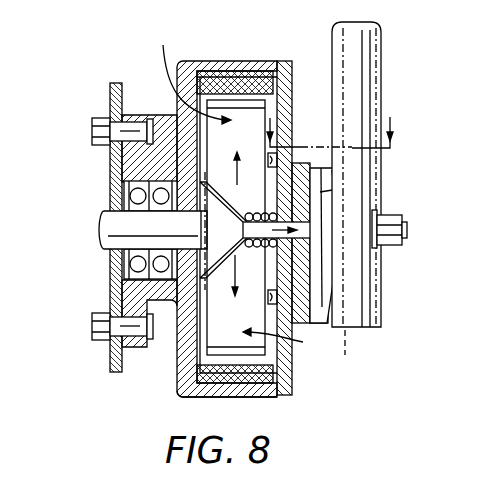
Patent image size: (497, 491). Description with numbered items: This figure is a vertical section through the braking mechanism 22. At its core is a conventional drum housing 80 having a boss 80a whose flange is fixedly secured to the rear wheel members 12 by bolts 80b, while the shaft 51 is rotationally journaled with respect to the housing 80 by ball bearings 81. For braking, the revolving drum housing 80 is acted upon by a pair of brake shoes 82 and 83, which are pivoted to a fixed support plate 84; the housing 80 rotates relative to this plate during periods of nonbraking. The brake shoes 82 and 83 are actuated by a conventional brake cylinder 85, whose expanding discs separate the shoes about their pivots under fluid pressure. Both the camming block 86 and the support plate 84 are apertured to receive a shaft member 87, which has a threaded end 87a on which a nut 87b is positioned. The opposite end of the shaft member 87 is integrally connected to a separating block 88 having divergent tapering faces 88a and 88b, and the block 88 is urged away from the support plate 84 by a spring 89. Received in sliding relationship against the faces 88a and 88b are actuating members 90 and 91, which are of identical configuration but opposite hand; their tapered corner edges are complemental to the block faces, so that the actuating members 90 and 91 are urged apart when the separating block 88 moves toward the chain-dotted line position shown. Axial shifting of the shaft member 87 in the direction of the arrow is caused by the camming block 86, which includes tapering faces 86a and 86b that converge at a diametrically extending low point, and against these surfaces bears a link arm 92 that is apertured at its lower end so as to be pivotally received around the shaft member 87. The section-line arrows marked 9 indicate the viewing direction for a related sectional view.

The section line / direction arrows 9 is at (324, 121).
The rear wheel members 12 is at (108, 100).
The braking mechanism 22 is at (176, 384).
The shaft 51 is at (110, 229).
The drum housing 80 is at (241, 60).
The boss 80a is at (146, 164).
The bolts 80b is at (133, 125).
The ball bearings 81 is at (126, 192).
The brake shoe 82 is at (252, 80).
The brake shoe 83 is at (244, 380).
The support plate 84 is at (291, 72).
The brake cylinder 85 is at (276, 250).
The camming block 86 is at (318, 160).
The tapering face 86a is at (361, 343).
The tapering face 86b is at (345, 188).
The shaft member 87 is at (305, 232).
The threaded end 87a is at (407, 228).
The nut 87b is at (391, 247).
The separating block 88 is at (207, 263).
The tapering face 88a is at (228, 206).
The tapering face 88b is at (224, 256).
The spring 89 is at (263, 213).
The actuating member 90 is at (190, 74).
The actuating member 91 is at (284, 344).
The link arm 92 is at (377, 48).